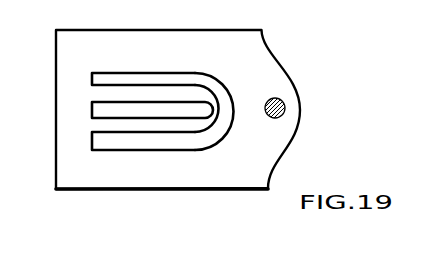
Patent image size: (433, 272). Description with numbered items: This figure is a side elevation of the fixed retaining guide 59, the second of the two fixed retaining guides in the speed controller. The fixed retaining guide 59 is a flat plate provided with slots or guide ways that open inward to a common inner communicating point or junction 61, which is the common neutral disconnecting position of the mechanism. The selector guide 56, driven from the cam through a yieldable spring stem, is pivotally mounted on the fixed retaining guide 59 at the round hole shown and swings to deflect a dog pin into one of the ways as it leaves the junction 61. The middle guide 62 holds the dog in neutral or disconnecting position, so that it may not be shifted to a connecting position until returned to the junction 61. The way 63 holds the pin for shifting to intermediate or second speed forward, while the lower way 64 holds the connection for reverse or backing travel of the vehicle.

The selector guide 56 is at (283, 115).
The fixed retaining guide 59 is at (226, 192).
The junction 61 is at (233, 122).
The middle guide 62 is at (122, 113).
The way 63 is at (113, 73).
The lower way 64 is at (139, 141).